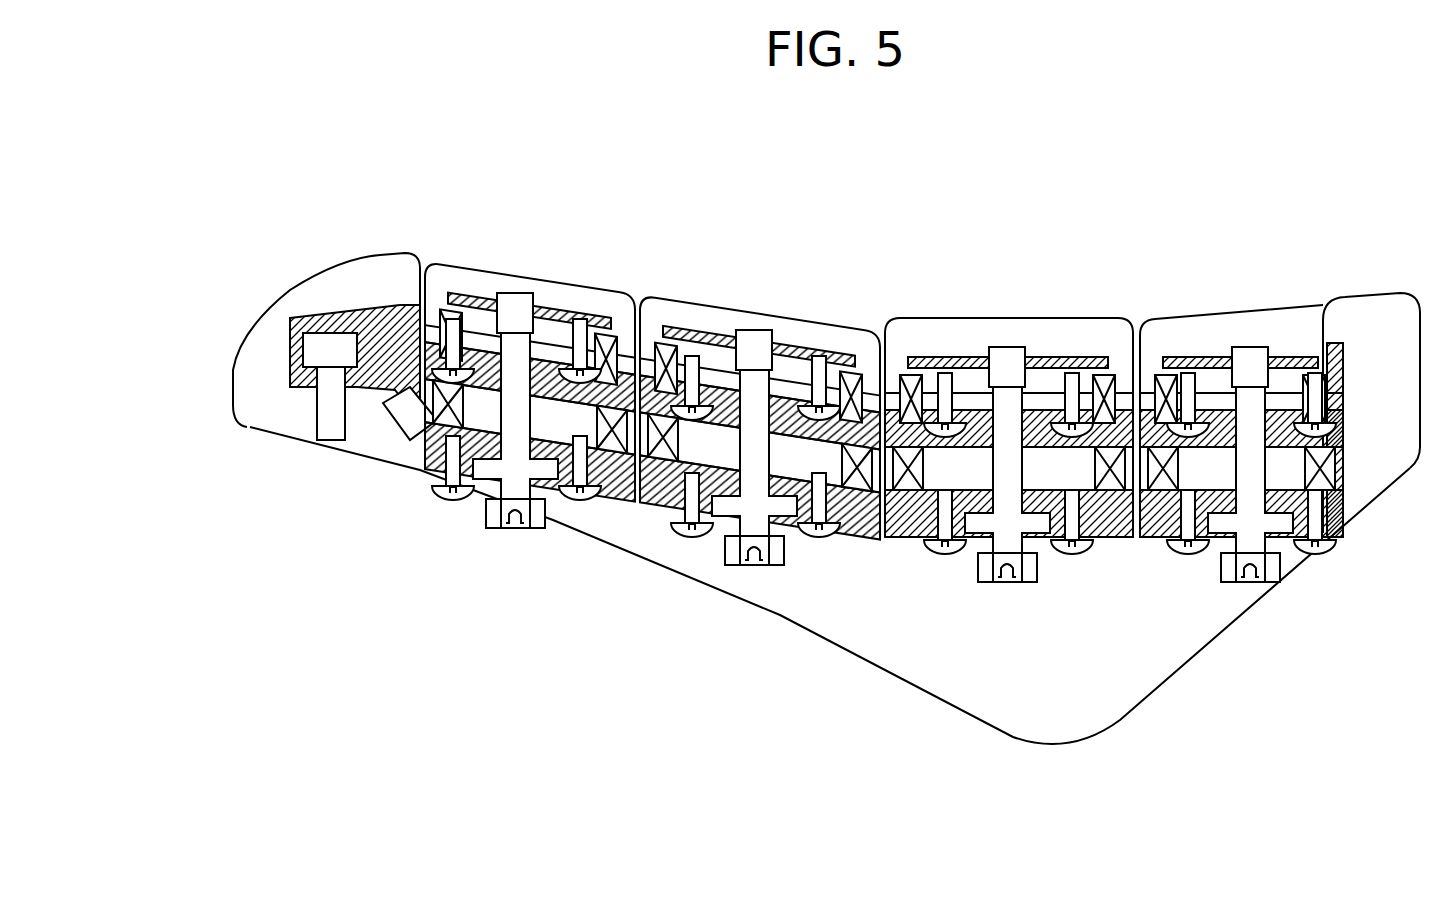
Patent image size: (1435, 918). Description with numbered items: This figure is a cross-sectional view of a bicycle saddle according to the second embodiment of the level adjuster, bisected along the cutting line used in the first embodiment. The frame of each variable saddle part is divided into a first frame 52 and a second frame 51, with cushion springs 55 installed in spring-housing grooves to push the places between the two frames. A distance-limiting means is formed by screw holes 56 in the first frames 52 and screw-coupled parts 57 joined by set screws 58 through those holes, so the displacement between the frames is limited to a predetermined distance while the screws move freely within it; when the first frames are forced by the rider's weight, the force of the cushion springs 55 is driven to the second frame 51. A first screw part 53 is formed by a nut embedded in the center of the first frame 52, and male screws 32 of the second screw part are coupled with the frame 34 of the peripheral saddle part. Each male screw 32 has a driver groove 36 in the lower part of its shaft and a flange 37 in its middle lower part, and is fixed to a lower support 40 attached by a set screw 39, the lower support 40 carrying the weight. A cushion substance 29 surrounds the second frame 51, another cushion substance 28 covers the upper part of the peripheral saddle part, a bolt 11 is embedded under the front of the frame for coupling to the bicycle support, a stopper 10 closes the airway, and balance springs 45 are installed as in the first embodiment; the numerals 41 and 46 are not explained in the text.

The stopper 10 is at (392, 425).
The bolt 11 is at (320, 397).
The cushion substance 28 is at (342, 255).
The cushion substance 29 is at (1257, 318).
The male screw 32 is at (1250, 520).
The frame 34 is at (362, 385).
The driver groove 36 is at (505, 527).
The flange 37 is at (960, 545).
The set screw 39 is at (1058, 545).
The lower support 40 is at (1212, 545).
The nut 41 is at (722, 525).
The balance spring 45 is at (852, 527).
The lower plate 46 is at (905, 520).
The second frame 51 is at (482, 315).
The first frame 52 is at (710, 345).
The first screw part 53 is at (521, 300).
The cushion spring 55 is at (652, 400).
The screw hole 56 is at (424, 340).
The screw-coupled part 57 is at (478, 302).
The set screw 58 is at (576, 325).